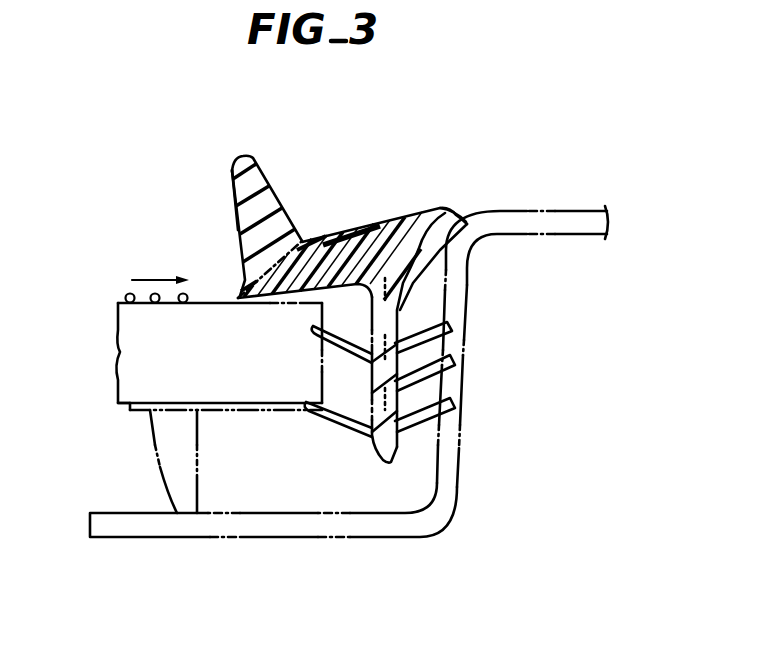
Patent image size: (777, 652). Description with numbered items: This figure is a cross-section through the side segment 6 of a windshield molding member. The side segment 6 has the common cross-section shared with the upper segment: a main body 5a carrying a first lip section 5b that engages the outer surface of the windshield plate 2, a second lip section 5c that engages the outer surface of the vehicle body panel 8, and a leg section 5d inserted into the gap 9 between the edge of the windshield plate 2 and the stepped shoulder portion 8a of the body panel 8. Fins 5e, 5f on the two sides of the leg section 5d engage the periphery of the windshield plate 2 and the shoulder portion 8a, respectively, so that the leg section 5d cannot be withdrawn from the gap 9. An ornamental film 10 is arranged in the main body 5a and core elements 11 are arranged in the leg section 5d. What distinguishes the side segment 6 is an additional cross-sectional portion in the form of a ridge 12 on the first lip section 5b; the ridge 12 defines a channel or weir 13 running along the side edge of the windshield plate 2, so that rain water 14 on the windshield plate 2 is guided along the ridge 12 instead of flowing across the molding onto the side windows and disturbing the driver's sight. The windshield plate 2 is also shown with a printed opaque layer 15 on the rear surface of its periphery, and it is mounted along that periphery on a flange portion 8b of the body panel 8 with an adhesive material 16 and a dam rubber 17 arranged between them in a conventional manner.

The windshield plate 2 is at (130, 351).
The main body 5a is at (403, 222).
The first lip section 5b is at (243, 278).
The second lip section 5c is at (455, 208).
The leg section 5d is at (388, 463).
The fin 5e is at (345, 430).
The fin 5f is at (414, 412).
The side segment 6 is at (394, 208).
The vehicle body panel 8 is at (569, 210).
The stepped shoulder portion 8a is at (461, 374).
The flange portion 8b is at (236, 540).
The gap 9 is at (430, 292).
The ornamental film 10 is at (353, 230).
The core elements 11 is at (395, 445).
The ridge 12 is at (243, 148).
The channel or weir 13 is at (233, 198).
The rain water 14 is at (125, 293).
The printed opaque layer 15 is at (133, 413).
The adhesive material 16 is at (280, 487).
The dam rubber 17 is at (157, 467).